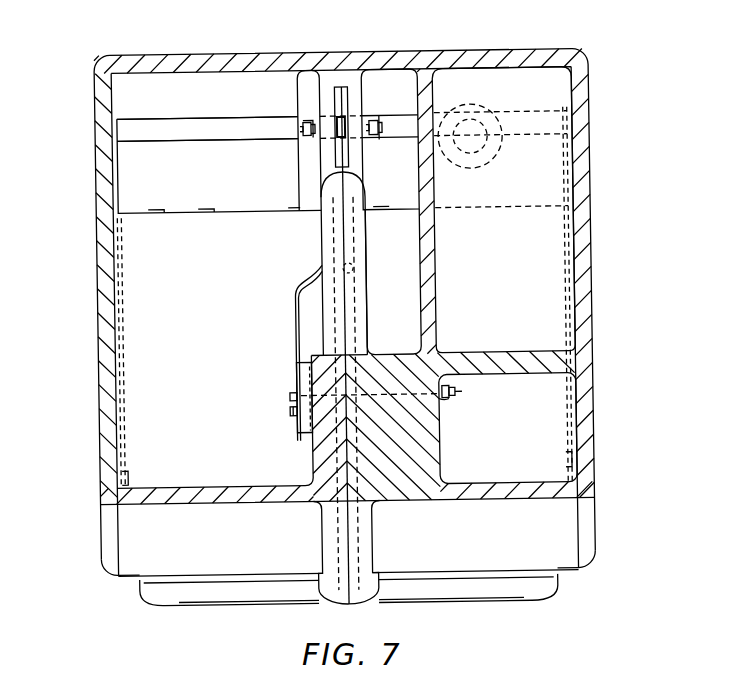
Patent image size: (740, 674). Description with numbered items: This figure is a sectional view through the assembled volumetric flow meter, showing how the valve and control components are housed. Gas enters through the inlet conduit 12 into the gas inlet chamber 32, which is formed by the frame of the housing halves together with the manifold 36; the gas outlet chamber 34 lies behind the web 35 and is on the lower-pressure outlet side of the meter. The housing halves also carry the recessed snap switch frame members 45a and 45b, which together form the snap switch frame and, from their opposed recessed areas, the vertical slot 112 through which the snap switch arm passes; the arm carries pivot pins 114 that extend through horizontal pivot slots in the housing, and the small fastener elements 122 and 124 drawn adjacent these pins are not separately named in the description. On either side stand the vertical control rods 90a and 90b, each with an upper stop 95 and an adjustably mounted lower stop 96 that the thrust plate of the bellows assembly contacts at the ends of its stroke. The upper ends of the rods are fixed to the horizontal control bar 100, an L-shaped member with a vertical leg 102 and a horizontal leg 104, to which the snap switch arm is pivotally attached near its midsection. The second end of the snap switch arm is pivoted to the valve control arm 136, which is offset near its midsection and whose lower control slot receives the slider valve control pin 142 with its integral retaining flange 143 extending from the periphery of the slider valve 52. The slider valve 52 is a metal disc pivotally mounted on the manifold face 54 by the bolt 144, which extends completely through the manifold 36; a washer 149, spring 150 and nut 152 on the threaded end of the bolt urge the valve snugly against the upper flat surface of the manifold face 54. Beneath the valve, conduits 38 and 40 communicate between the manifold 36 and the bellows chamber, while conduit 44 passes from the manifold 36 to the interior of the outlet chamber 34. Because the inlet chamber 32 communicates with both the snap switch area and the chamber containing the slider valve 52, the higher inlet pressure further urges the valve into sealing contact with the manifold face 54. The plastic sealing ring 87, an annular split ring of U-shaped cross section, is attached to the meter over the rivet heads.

The inlet conduit 12 is at (463, 102).
The gas inlet chamber 32 is at (231, 82).
The gas outlet chamber 34 is at (514, 85).
The web 35 is at (437, 248).
The manifold 36 is at (338, 452).
The conduit 38 is at (352, 270).
The conduit 40 is at (327, 535).
The conduit 44 is at (404, 368).
The snap switch frame member 45a is at (324, 174).
The snap switch frame member 45b is at (364, 167).
The slider valve 52 is at (309, 364).
The manifold face 54 is at (308, 425).
The plastic sealing ring 87 is at (553, 581).
The vertical control rod 90a is at (98, 294).
The vertical control rod 90b is at (597, 294).
The upper stop 95 is at (123, 324).
The lower stop 96 is at (125, 473).
The horizontal control bar 100 is at (199, 115).
The vertical leg 102 is at (146, 117).
The horizontal leg 104 is at (183, 140).
The vertical slot 112 is at (346, 88).
The pivot pin 114 is at (301, 134).
The bolt 122 is at (315, 117).
The bolt head 124 is at (311, 108).
The valve control arm 136 is at (296, 289).
The slider valve control pin 142 is at (292, 411).
The retaining flange 143 is at (291, 416).
The bolt 144 is at (291, 397).
The washer 149 is at (446, 405).
The spring 150 is at (447, 399).
The nut 152 is at (456, 387).